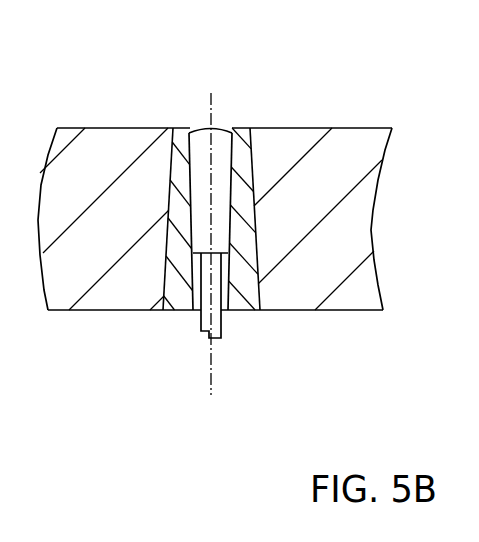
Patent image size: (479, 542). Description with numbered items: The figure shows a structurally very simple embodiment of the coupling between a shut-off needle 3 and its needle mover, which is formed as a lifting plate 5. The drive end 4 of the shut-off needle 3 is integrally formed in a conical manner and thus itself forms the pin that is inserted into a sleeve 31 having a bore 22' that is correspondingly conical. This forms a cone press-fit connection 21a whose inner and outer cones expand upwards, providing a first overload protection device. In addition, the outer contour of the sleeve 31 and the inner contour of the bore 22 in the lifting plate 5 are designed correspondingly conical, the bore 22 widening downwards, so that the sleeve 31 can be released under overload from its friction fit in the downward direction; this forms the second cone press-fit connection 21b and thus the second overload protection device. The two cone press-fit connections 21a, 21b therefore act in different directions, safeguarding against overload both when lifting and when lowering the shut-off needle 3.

The shut-off needle 3 is at (210, 313).
The drive end 4 is at (218, 143).
The lifting plate 5 is at (342, 240).
The cone press-fit connection 21a is at (240, 154).
The cone press-fit connection 21b is at (165, 256).
The bore 22 is at (122, 178).
The bore 22' is at (317, 258).
The sleeve 31 is at (247, 286).